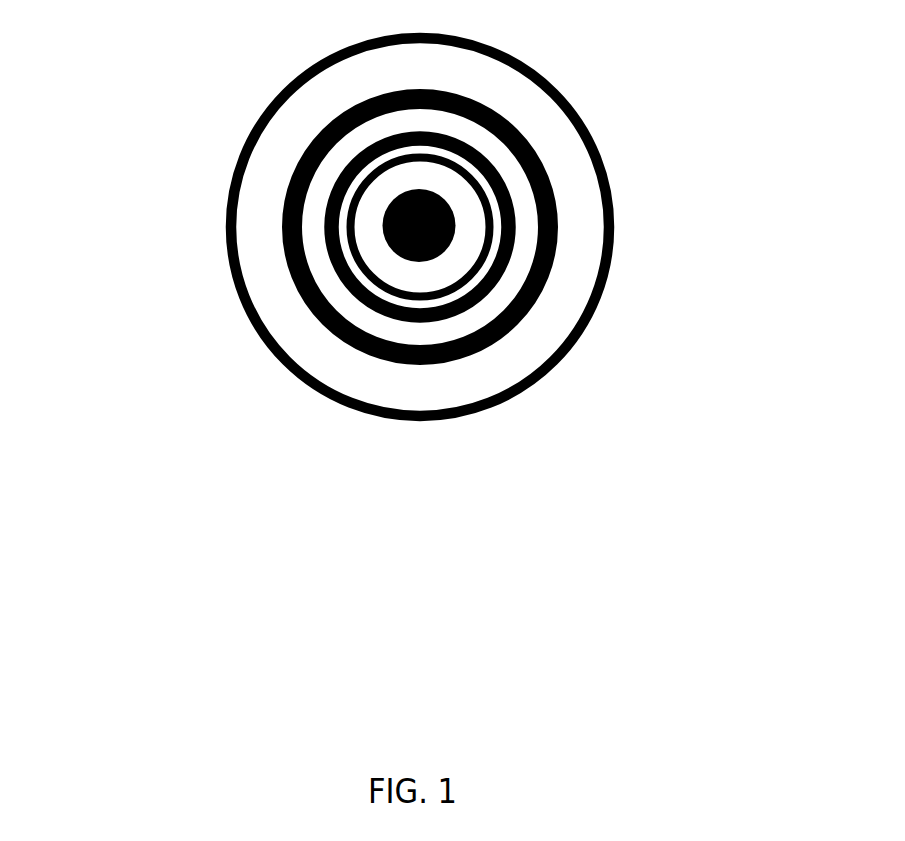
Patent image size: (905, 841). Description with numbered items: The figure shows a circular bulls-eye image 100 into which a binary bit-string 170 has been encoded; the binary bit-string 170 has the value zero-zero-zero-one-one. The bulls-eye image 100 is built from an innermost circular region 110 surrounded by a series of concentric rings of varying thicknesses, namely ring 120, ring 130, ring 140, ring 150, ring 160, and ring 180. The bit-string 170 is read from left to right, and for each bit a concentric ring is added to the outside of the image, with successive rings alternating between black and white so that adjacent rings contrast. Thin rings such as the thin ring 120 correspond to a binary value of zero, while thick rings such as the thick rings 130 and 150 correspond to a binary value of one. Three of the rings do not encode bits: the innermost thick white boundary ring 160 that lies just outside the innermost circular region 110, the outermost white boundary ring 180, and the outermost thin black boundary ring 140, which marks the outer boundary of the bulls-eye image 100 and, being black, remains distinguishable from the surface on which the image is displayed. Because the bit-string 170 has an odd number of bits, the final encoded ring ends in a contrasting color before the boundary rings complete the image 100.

The circular image 100 is at (192, 90).
The innermost circular region 110 is at (456, 207).
The thin ring 120 is at (486, 267).
The thick ring 130 is at (512, 333).
The outermost thin black boundary ring 140 is at (275, 357).
The thick ring 150 is at (318, 267).
The innermost white boundary ring 160 is at (385, 192).
The binary bit-string 170 is at (432, 510).
The outermost white ring 180 is at (355, 378).